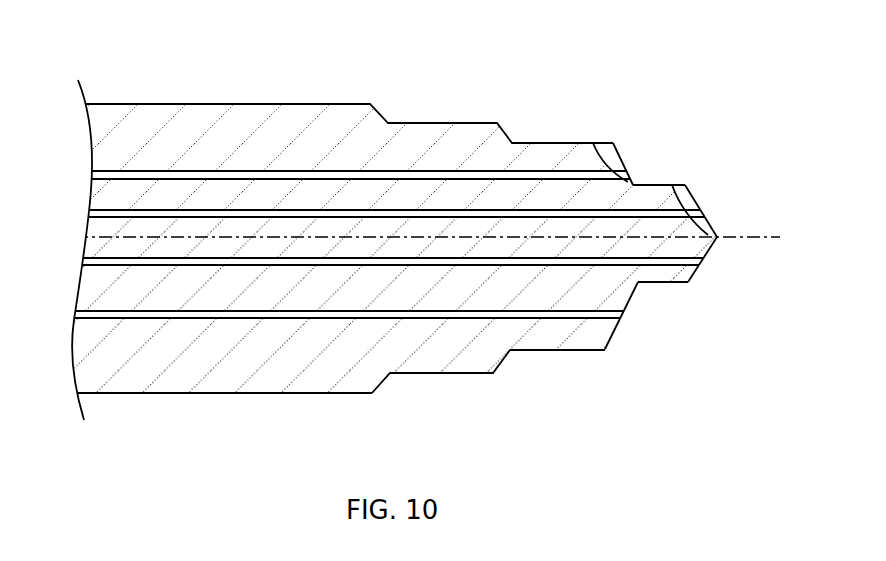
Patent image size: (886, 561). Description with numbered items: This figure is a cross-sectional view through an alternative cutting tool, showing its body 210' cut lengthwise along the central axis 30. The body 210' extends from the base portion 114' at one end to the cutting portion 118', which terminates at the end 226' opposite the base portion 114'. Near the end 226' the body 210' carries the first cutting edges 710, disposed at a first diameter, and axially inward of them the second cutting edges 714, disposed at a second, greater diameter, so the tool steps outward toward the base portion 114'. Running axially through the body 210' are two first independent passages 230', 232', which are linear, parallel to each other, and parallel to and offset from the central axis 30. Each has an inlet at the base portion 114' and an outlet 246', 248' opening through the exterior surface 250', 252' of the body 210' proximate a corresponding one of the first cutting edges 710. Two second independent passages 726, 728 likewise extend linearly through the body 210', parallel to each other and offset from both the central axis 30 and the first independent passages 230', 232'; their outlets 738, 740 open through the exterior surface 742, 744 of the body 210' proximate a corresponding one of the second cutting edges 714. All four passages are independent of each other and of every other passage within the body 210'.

The central axis 30 is at (50, 233).
The base portion 114' is at (340, 388).
The cutting portion 118' is at (441, 396).
The body 210' is at (216, 433).
The first independent passage 230' is at (380, 120).
The first independent passage 232' is at (381, 354).
The second independent passage 726 is at (260, 171).
The second independent passage 728 is at (323, 318).
The second cutting edges 714 is at (633, 185).
The outlet 738 is at (630, 183).
The exterior surface 742 is at (633, 185).
The first cutting edges 710 is at (687, 187).
The outlet 246' is at (743, 194).
The exterior surface 250' is at (446, 202).
The end 226' is at (446, 237).
The outlet 248' is at (749, 271).
The exterior surface 252' is at (710, 311).
The outlet 740 is at (625, 315).
The exterior surface 744 is at (615, 337).